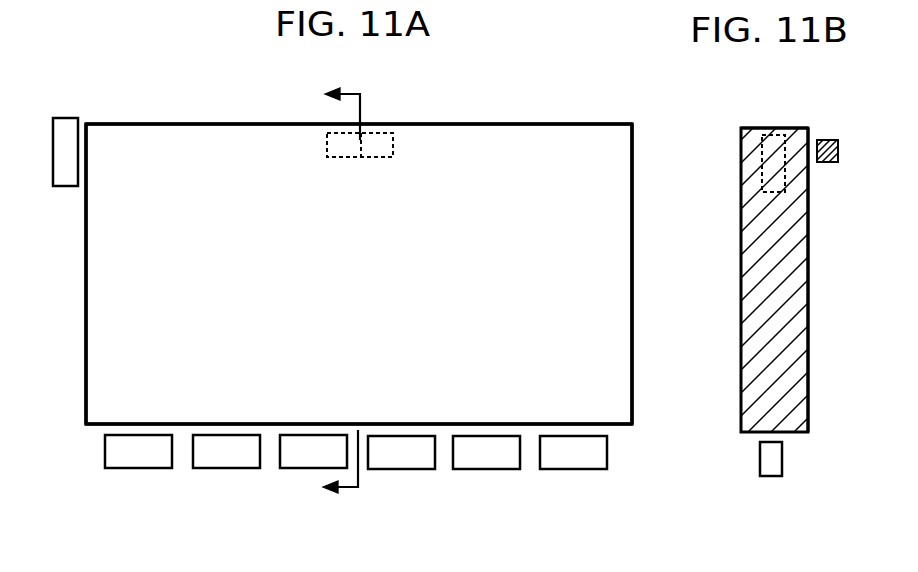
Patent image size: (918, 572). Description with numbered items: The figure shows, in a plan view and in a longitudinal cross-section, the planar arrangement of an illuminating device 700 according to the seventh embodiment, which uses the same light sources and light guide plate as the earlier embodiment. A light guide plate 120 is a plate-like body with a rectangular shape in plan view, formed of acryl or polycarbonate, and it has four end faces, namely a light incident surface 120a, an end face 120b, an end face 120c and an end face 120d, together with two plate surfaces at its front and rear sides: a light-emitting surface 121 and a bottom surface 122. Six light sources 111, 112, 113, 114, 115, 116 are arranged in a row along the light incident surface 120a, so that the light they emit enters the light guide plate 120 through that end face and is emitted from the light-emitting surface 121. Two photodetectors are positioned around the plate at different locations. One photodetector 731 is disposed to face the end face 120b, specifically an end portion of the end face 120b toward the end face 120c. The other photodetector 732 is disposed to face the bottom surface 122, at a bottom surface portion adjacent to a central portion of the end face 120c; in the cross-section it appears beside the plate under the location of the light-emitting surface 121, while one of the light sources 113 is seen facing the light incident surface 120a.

In FIG. 11A, the illuminating device 700 is at (212, 70).
In FIG. 11A, the light guide plate 120 is at (612, 192).
In FIG. 11A, the light-emitting surface 121 is at (371, 279).
In FIG. 11B, the light-emitting surface 121 is at (740, 256).
In FIG. 11B, the bottom surface 122 is at (808, 297).
In FIG. 11A, the light incident surface 120a is at (270, 424).
In FIG. 11A, the end face 120b is at (86, 275).
In FIG. 11A, the end face 120c is at (230, 125).
In FIG. 11B, the end face 120c is at (748, 128).
In FIG. 11A, the end face 120d is at (632, 374).
In FIG. 11A, the photodetector 731 is at (53, 146).
In FIG. 11B, the photodetector 731 is at (776, 135).
In FIG. 11A, the photodetector 732 is at (393, 146).
In FIG. 11B, the photodetector 732 is at (838, 150).
In FIG. 11A, the light source 111 is at (138, 469).
In FIG. 11A, the light source 112 is at (224, 469).
In FIG. 11A, the light source 113 is at (285, 469).
In FIG. 11B, the light source 113 is at (782, 466).
In FIG. 11A, the light source 114 is at (400, 470).
In FIG. 11A, the light source 115 is at (485, 470).
In FIG. 11A, the light source 116 is at (571, 470).